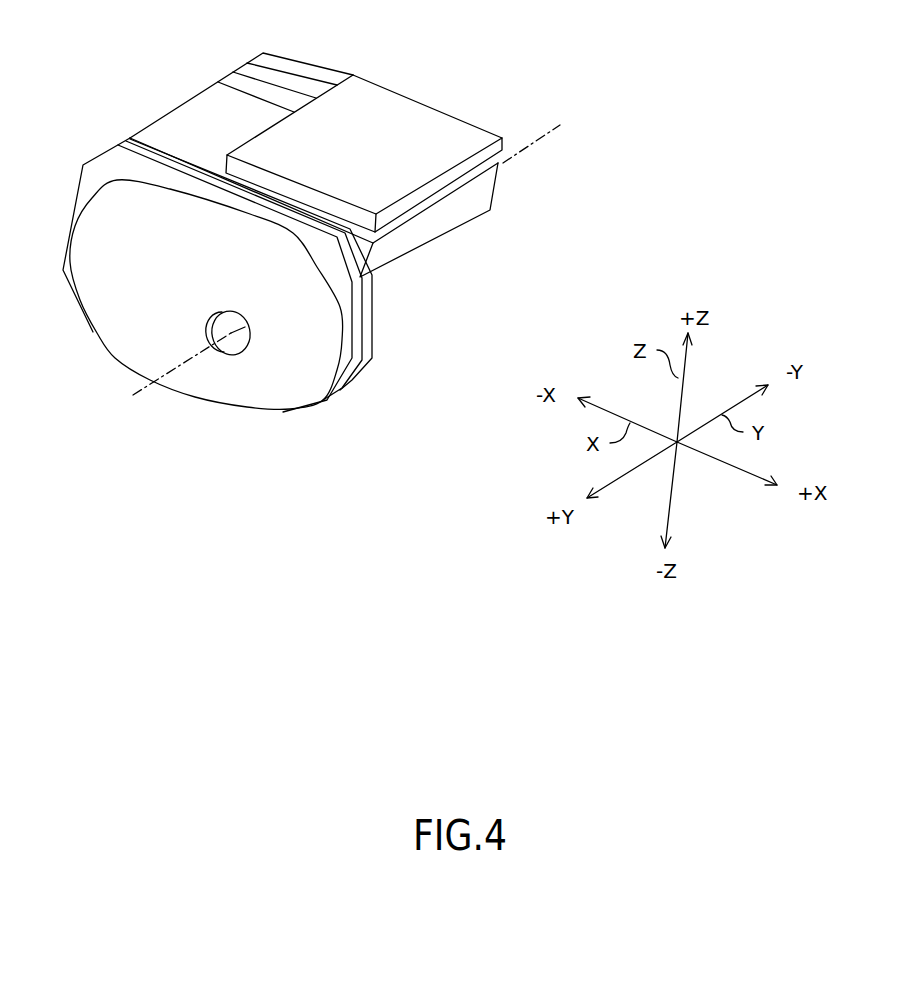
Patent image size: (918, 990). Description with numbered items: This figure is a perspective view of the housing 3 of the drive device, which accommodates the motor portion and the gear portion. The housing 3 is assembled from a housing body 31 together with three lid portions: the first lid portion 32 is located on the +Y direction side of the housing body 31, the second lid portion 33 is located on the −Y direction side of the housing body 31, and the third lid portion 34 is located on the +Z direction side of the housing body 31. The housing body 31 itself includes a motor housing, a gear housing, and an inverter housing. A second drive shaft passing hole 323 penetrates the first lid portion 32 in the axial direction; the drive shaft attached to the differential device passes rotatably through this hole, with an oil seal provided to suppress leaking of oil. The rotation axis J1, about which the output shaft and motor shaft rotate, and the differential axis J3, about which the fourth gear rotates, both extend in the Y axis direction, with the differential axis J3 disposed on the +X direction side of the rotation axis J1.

The housing 3 is at (123, 108).
The housing body 31 is at (197, 98).
The first lid portion 32 is at (72, 237).
The second lid portion 33 is at (308, 72).
The third lid portion 34 is at (453, 128).
The second drive shaft passing hole 323 is at (233, 358).
The rotation axis J1 is at (433, 90).
The differential axis J3 is at (533, 142).